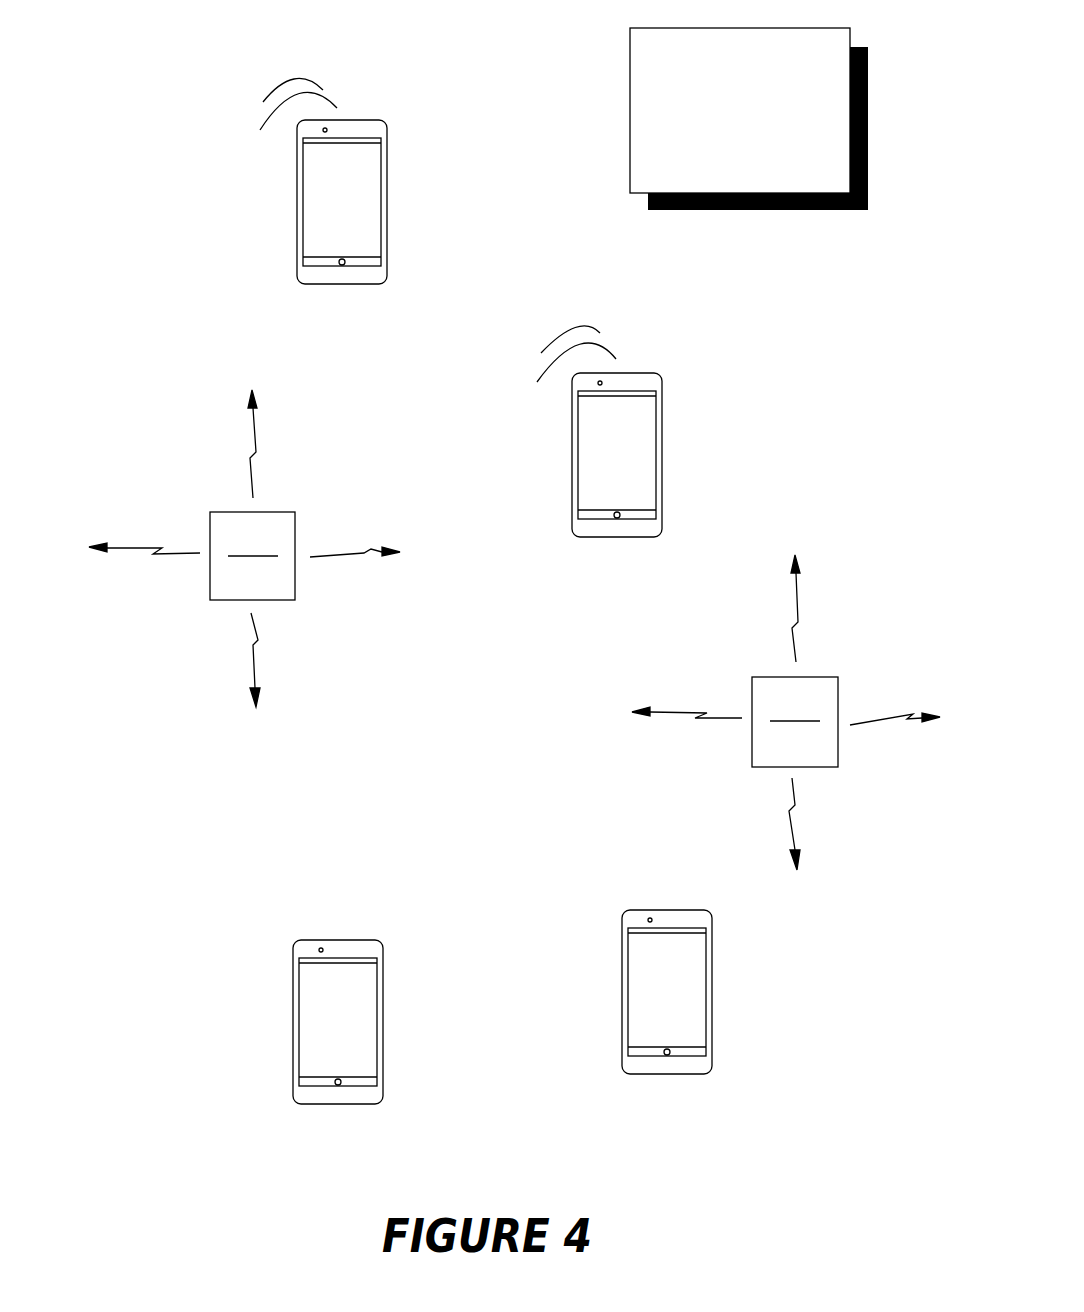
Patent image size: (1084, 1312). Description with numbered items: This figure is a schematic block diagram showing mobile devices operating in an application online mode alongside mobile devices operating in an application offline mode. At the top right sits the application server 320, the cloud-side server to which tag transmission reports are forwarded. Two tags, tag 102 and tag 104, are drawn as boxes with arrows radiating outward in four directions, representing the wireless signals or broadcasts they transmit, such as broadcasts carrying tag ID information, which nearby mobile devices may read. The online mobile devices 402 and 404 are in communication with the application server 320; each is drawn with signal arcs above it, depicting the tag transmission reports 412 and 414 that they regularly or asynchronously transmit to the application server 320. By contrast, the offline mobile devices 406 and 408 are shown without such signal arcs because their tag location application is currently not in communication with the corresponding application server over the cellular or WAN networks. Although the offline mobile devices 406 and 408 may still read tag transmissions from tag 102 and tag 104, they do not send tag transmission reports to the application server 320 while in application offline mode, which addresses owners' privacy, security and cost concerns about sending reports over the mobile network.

The application server 320 is at (721, 148).
The online mobile device 402 is at (297, 196).
The online mobile device 404 is at (573, 445).
The offline mobile device 406 is at (292, 1008).
The offline mobile device 408 is at (620, 982).
The tag transmission report 412 is at (267, 83).
The tag transmission report 414 is at (555, 332).
The tag 102 is at (236, 577).
The tag 104 is at (778, 742).